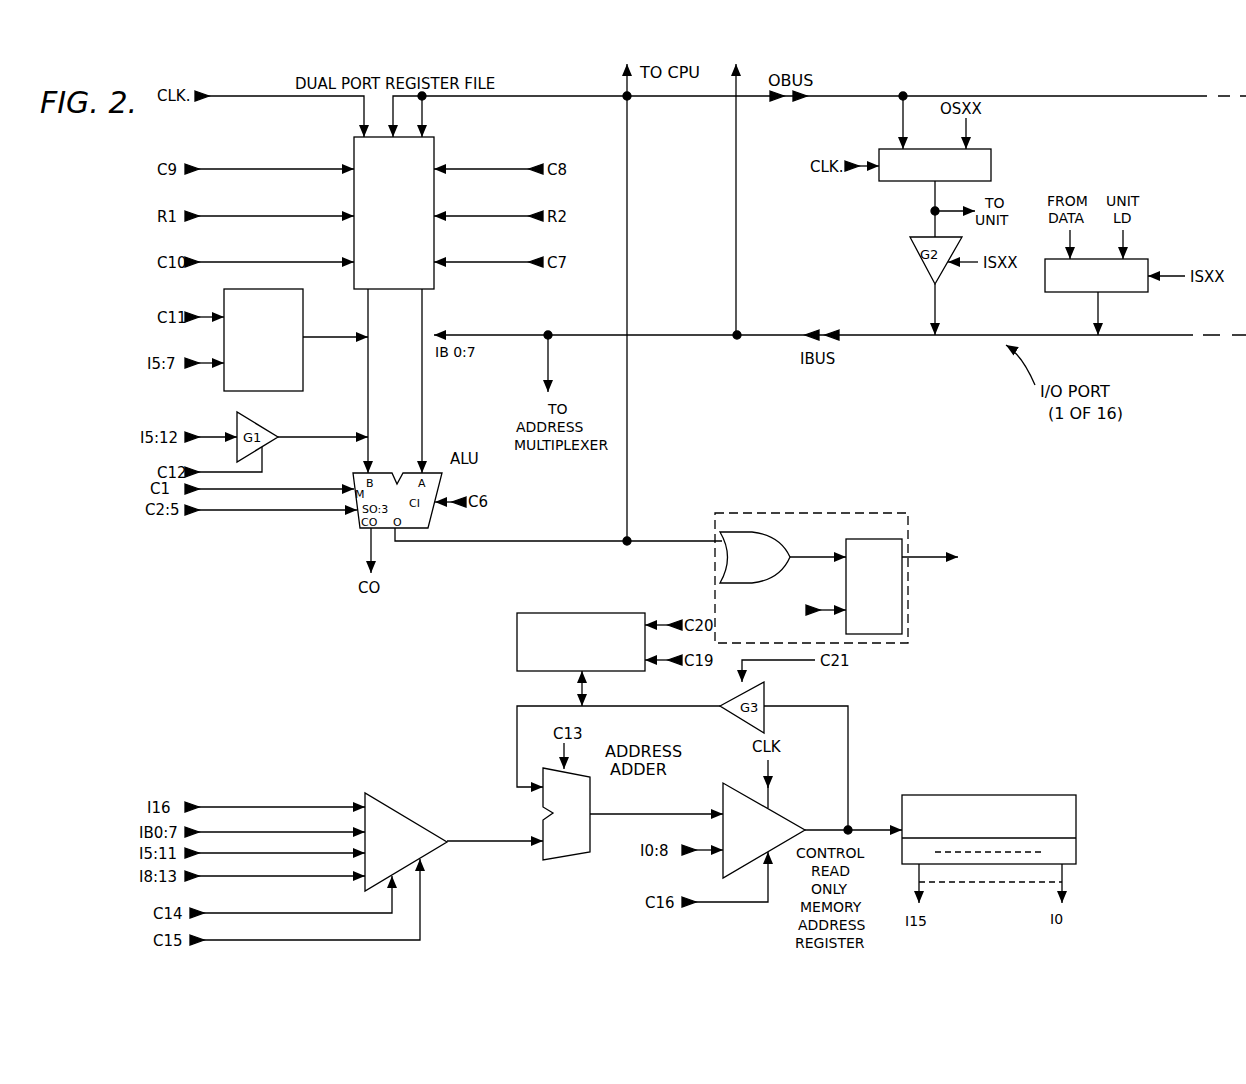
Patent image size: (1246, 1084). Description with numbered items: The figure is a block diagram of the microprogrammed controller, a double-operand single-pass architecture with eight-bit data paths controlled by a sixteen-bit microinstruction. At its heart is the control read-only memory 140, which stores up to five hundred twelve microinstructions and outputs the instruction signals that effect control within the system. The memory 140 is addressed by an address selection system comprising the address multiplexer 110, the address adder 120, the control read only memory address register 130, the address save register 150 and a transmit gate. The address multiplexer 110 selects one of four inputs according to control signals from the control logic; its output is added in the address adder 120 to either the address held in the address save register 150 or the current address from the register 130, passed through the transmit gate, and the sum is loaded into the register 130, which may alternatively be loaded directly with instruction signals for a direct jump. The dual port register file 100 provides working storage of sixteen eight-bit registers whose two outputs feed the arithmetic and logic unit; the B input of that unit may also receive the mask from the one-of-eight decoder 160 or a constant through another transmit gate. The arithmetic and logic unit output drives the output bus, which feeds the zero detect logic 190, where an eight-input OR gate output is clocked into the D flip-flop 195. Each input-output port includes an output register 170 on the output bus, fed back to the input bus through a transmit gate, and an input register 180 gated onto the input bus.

The dual port register file 100 is at (434, 149).
The address multiplexer 110 is at (405, 806).
The address adder 120 is at (590, 800).
The control read only memory address register 130 is at (790, 818).
The control read-only memory 140 is at (1076, 810).
The address save register 150 is at (537, 613).
The one-of-eight decoder 160 is at (303, 376).
The output register 170 is at (991, 149).
The input register 180 is at (1133, 292).
The zero detect logic 190 is at (845, 574).
The D flip-flop 195 is at (902, 628).